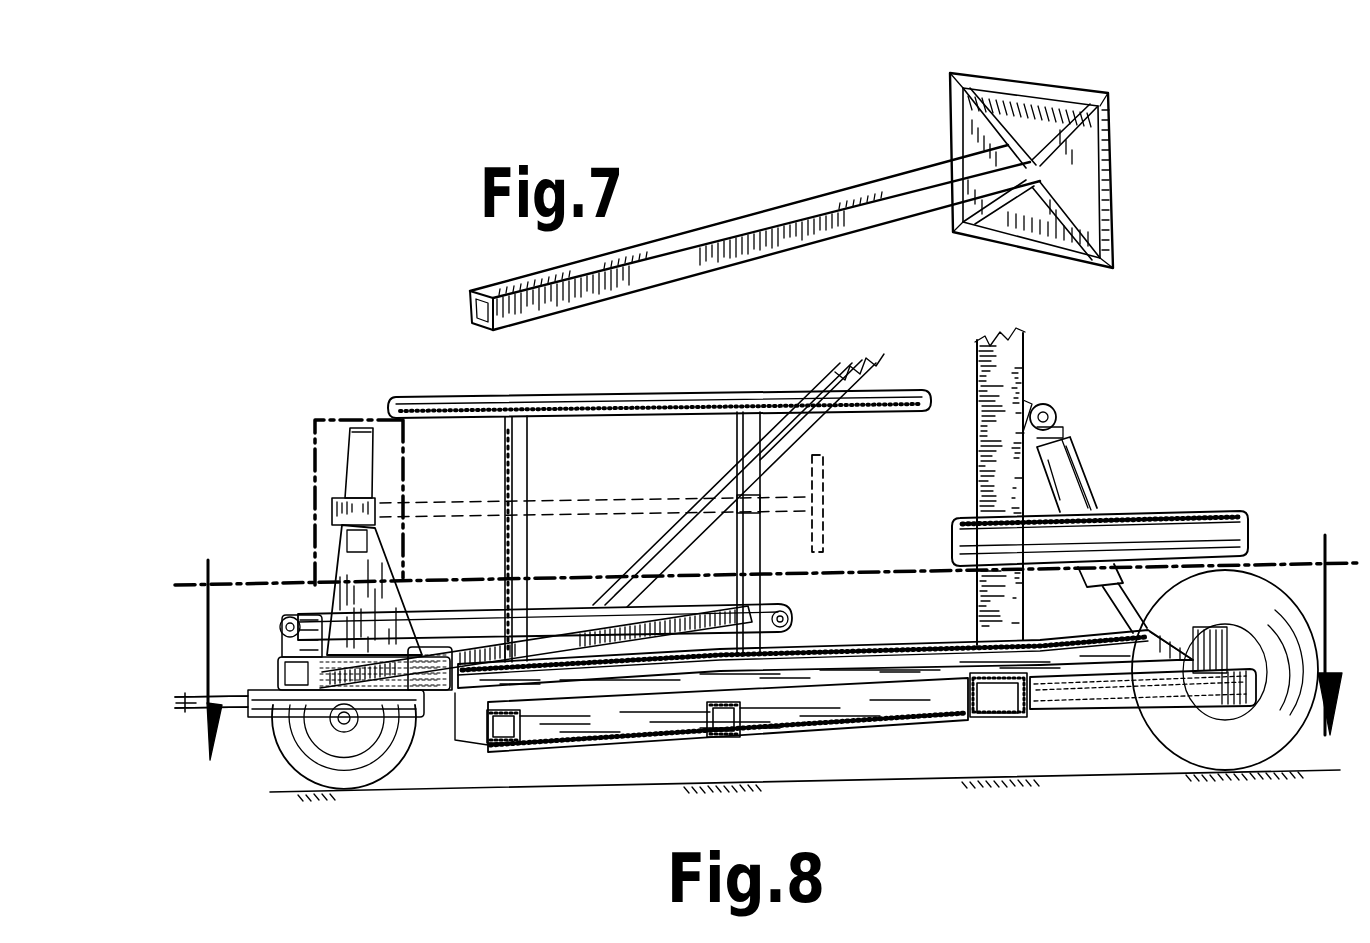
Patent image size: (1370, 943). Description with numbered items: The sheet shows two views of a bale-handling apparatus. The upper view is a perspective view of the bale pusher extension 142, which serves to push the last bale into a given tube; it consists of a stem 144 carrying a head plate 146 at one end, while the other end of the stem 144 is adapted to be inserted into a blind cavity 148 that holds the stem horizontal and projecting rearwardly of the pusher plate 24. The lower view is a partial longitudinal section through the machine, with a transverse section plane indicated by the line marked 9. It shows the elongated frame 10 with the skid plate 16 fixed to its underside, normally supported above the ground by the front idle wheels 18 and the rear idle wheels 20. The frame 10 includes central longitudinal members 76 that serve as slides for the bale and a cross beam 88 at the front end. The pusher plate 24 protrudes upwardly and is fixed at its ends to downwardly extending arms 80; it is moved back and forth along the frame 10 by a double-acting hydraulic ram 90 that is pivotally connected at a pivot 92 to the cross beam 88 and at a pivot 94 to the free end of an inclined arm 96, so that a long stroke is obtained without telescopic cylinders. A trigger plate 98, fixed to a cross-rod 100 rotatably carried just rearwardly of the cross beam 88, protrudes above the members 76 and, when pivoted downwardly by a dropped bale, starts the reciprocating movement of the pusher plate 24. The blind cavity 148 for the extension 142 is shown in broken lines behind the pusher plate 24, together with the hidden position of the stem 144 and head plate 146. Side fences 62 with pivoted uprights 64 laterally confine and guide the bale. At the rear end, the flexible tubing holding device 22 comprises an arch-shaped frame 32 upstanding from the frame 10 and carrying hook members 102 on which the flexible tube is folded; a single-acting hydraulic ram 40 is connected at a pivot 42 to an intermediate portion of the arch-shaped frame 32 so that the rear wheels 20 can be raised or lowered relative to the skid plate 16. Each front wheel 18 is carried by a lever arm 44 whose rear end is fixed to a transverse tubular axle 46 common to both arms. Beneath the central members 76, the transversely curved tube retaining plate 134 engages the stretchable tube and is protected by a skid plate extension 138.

In FIG. 8, the section line 9- 9 is at (761, 627).
In FIG. 8, the elongated frame 10 is at (264, 677).
In FIG. 8, the skid plate 16 is at (838, 733).
In FIG. 8, the front idle wheels 18 is at (308, 738).
In FIG. 8, the rear idle wheels 20 is at (1195, 740).
In FIG. 8, the flexible tubing holding device 22 is at (1028, 339).
In FIG. 8, the pusher plate 24 is at (350, 440).
In FIG. 8, the arch-shaped frame 32 is at (1022, 381).
In FIG. 8, the single acting hydraulic ram 40 is at (1075, 456).
In FIG. 8, the pivotal connection 42 is at (1052, 420).
In FIG. 8, the lever arm 44 is at (395, 770).
In FIG. 8, the transverse tubular axle 46 is at (455, 697).
In FIG. 8, the side fences 62 is at (605, 405).
In FIG. 8, the uprights 64 is at (525, 445).
In FIG. 8, the central longitudinal members 76 is at (837, 655).
In FIG. 8, the downwardly extending arms 80 is at (283, 586).
In FIG. 8, the cross beam 88 is at (245, 660).
In FIG. 8, the double-acting hydraulic ram 90 is at (600, 623).
In FIG. 8, the pivotal connection 92 is at (282, 636).
In FIG. 8, the pivotal connection 94 is at (808, 593).
In FIG. 8, the inclined arm 96 is at (720, 633).
In FIG. 8, the trigger plate 98 is at (440, 645).
In FIG. 8, the cross-rod 100 is at (268, 692).
In FIG. 8, the hook members 102 is at (1195, 510).
In FIG. 8, the tube retaining plate 134 is at (1078, 712).
In FIG. 8, the skid plate extension 138 is at (1138, 705).
In FIG. 7, the bale pusher extension 142 is at (806, 194).
In FIG. 8, the bale pusher extension 142 is at (826, 503).
In FIG. 7, the stem 144 is at (742, 222).
In FIG. 8, the stem 144 is at (545, 500).
In FIG. 7, the head plate 146 is at (1105, 184).
In FIG. 8, the head plate 146 is at (830, 520).
In FIG. 8, the blind cavity 148 is at (350, 485).